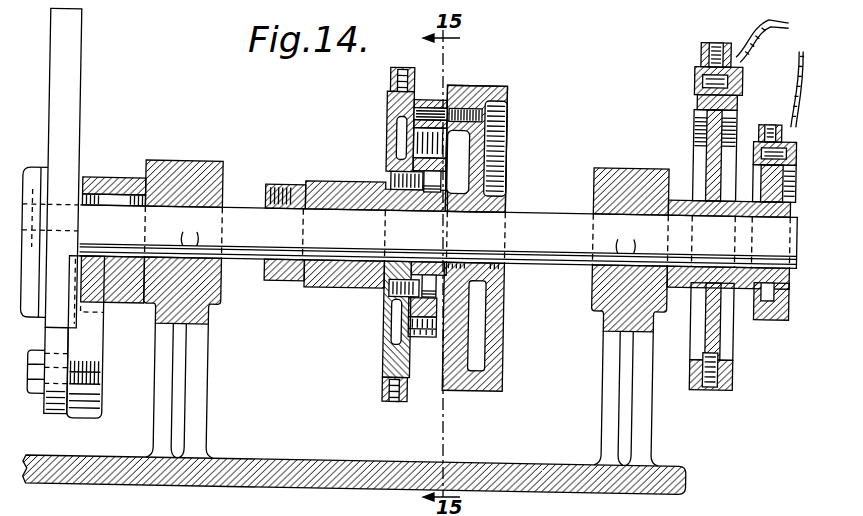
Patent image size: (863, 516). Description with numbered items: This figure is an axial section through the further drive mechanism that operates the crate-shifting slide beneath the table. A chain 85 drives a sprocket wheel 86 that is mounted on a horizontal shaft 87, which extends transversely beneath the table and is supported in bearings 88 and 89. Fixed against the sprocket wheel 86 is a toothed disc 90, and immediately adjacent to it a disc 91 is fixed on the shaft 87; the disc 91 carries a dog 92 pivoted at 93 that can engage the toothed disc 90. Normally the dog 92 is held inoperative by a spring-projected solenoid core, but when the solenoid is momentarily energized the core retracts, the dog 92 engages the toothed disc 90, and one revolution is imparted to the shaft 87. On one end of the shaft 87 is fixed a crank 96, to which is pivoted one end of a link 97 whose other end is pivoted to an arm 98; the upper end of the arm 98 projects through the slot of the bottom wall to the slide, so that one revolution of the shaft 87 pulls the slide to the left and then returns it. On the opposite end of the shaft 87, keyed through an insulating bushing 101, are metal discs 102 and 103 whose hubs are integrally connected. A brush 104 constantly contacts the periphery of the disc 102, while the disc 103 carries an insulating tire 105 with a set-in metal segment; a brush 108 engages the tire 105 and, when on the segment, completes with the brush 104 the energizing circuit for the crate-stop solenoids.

The chain 85 is at (388, 80).
The sprocket wheel 86 is at (386, 366).
The horizontal shaft 87 is at (530, 224).
The bearing 88 is at (213, 296).
The bearing 89 is at (600, 296).
The toothed disc 90 is at (433, 338).
The disc 91 is at (508, 96).
The dog 92 is at (450, 102).
The pivot 93 is at (428, 108).
The crank 96 is at (92, 389).
The link 97 is at (64, 396).
The arm 98 is at (66, 127).
The insulating bushing 101 is at (680, 205).
The metal disc 102 is at (768, 318).
The metal disc 103 is at (737, 370).
The brush 104 is at (753, 142).
The tire 105 is at (700, 392).
The brush 108 is at (692, 78).